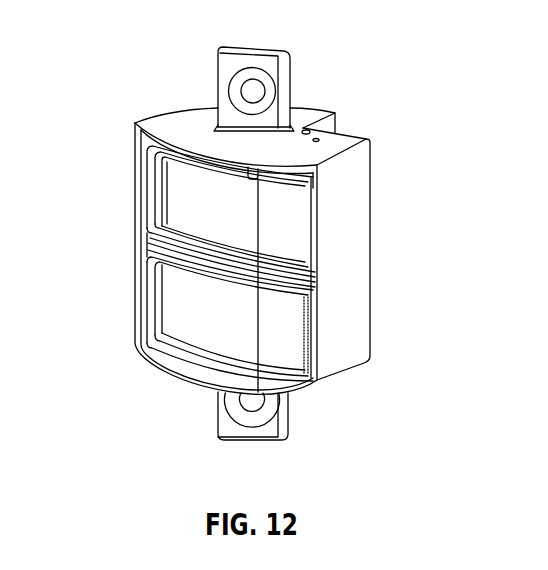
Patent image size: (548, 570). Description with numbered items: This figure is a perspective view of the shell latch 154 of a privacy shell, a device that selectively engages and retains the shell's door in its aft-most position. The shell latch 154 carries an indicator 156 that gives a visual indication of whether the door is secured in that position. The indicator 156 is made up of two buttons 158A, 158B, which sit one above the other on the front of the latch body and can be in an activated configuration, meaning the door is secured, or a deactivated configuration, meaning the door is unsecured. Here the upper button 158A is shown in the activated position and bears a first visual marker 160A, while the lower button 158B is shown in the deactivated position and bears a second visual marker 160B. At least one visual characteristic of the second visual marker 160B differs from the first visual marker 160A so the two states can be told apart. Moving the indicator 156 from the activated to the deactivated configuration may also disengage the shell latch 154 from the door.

The shell latch 154 is at (164, 43).
The indicator 156 is at (182, 323).
The button 158A is at (180, 203).
The button 158B is at (217, 362).
The first visual marker 160A is at (283, 265).
The second visual marker 160B is at (306, 372).